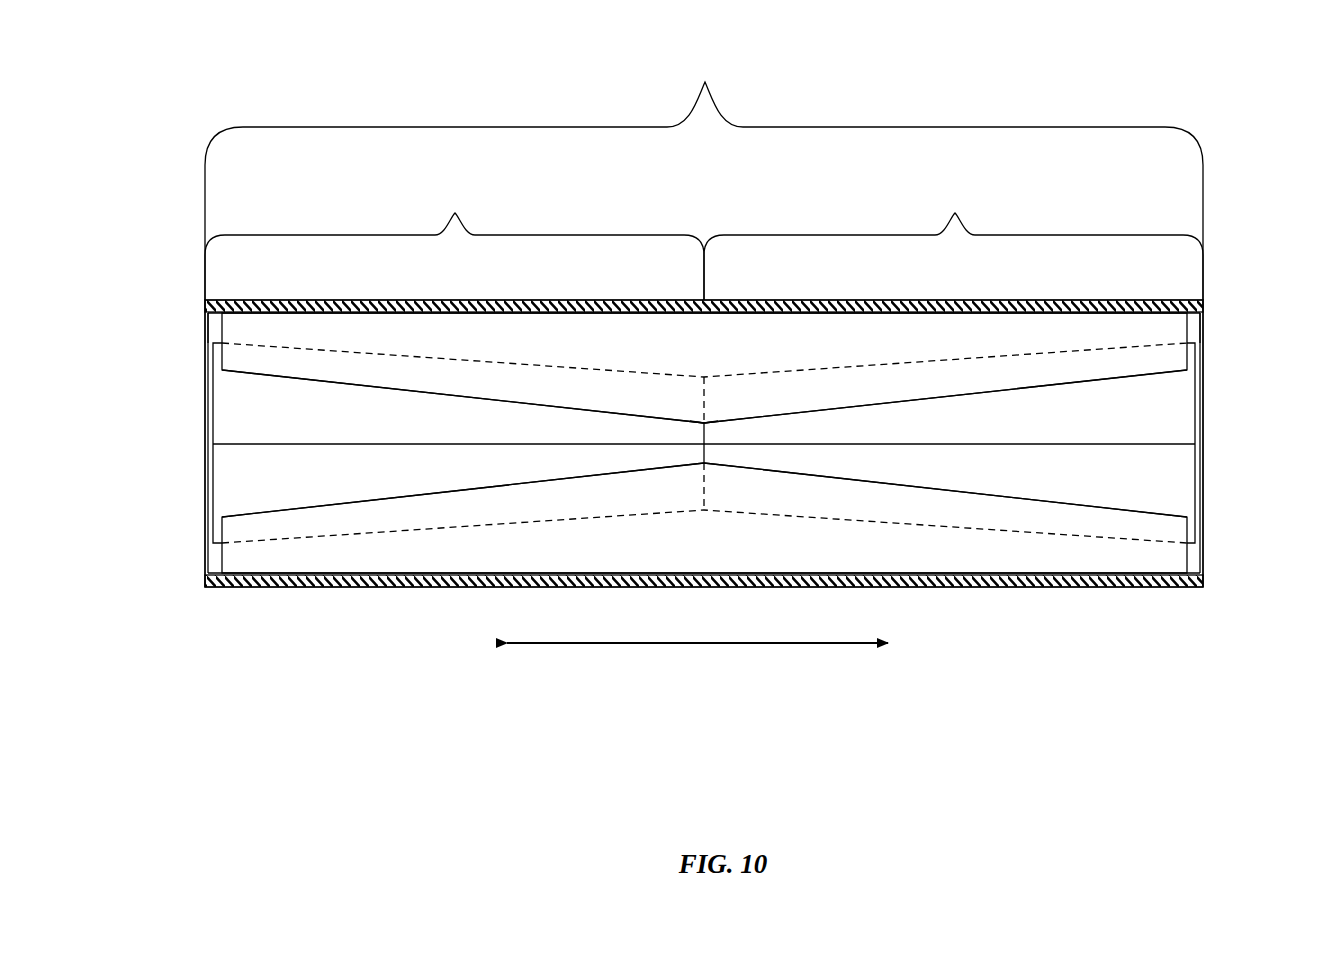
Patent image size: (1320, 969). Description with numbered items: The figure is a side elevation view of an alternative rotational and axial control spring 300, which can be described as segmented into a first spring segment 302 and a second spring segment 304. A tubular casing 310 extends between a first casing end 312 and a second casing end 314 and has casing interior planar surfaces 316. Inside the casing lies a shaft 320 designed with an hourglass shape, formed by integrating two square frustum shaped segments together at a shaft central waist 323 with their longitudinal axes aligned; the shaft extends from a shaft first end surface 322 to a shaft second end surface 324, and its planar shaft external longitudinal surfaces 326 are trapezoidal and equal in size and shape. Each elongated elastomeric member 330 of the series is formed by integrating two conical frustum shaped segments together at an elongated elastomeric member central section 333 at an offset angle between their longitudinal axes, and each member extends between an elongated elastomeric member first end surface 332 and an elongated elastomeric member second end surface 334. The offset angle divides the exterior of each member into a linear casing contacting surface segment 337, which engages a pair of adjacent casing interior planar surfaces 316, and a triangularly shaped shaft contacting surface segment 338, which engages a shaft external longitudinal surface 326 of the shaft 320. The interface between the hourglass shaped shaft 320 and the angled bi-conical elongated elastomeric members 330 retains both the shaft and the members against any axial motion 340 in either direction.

The rotational and axial control spring 300 is at (704, 175).
The first spring segment 302 is at (454, 242).
The second spring segment 304 is at (953, 242).
The tubular casing 310 is at (462, 587).
The first casing end 312 is at (205, 483).
The second casing end 314 is at (1203, 483).
The casing interior planar surface 316 is at (725, 313).
The shaft 320 is at (253, 455).
The shaft first end surface 322 is at (213, 400).
The shaft central waist 323 is at (706, 436).
The shaft second end surface 324 is at (1195, 400).
The shaft external longitudinal surface 326 is at (535, 360).
The elongated elastomeric member 330 is at (343, 330).
The elongated elastomeric member first end surface 332 is at (213, 330).
The elongated elastomeric member central section 333 is at (704, 423).
The elongated elastomeric member second end surface 334 is at (1192, 332).
The linear casing contacting surface segment 337 is at (399, 387).
The triangularly shaped shaft contacting surface segment 338 is at (398, 300).
The axial motion 340 is at (697, 645).